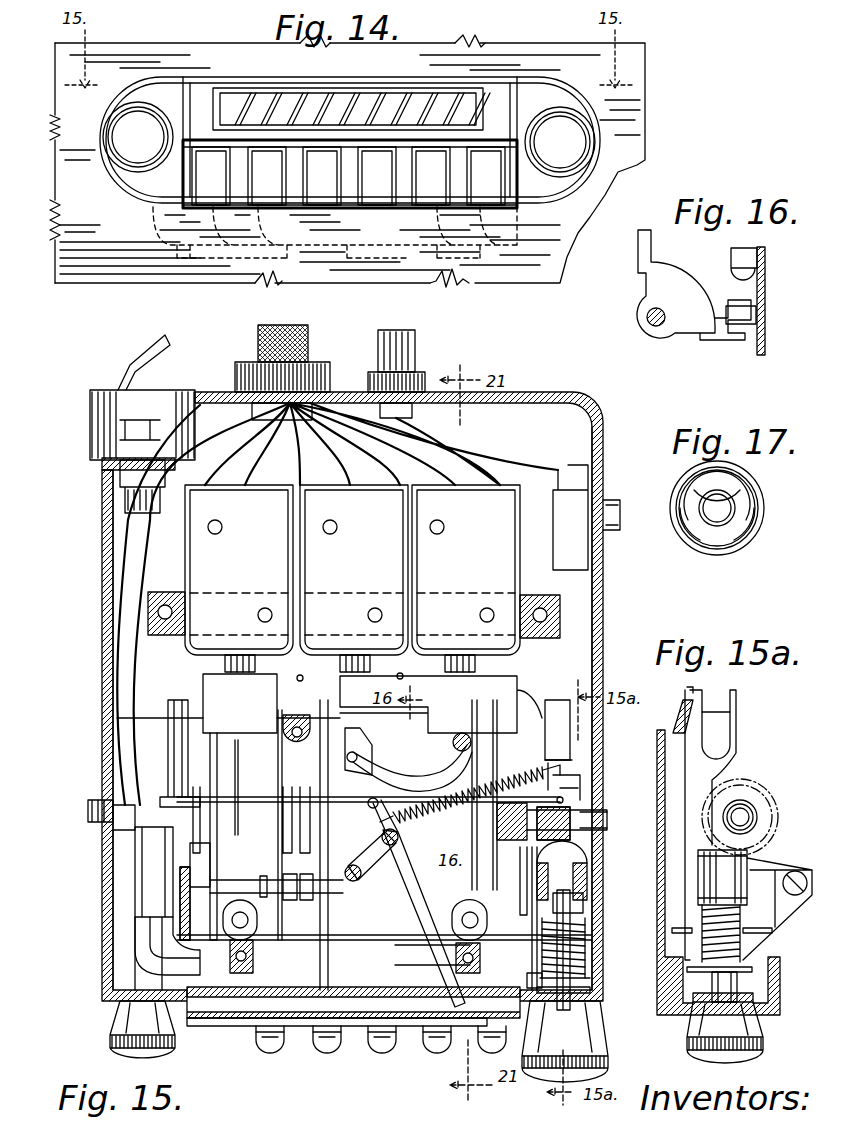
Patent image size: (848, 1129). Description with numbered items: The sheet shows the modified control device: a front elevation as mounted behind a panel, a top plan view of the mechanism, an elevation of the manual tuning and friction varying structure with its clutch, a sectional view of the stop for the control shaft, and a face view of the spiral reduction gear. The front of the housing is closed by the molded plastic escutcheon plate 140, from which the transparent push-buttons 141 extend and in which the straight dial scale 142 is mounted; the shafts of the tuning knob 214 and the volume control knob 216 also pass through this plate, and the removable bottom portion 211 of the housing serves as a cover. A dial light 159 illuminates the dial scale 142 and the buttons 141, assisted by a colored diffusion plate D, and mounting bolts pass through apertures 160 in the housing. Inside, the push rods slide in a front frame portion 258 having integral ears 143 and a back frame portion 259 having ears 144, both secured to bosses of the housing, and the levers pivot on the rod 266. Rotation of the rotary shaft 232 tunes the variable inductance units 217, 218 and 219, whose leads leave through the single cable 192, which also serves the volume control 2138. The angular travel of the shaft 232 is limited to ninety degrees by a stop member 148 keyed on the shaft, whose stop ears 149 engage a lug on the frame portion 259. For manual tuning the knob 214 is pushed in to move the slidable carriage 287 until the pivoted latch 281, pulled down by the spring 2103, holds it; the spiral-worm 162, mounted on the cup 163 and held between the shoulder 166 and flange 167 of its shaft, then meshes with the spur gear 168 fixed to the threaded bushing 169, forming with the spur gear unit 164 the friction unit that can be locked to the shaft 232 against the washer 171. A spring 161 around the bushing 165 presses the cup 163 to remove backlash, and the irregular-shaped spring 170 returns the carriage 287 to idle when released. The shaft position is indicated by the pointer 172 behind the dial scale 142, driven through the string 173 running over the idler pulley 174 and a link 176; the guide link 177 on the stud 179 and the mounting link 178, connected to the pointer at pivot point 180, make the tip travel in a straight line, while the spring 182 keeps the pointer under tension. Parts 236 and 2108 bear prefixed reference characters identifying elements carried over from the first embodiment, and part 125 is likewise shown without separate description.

In FIG. 14, the escutcheon plate 140 is at (200, 95).
In FIG. 15A, the escutcheon plate 140 is at (672, 1012).
In FIG. 14, the push-button 141 is at (320, 200).
In FIG. 15, the push-button 141 is at (382, 1050).
In FIG. 14, the dial scale 142 is at (450, 102).
In FIG. 15, the dial scale 142 is at (300, 1028).
In FIG. 15, the integral ears 143 is at (240, 985).
In FIG. 16, the ears 144 is at (750, 262).
In FIG. 15, the ears 144 is at (288, 723).
In FIG. 16, the stop member 148 is at (685, 277).
In FIG. 16, the stop ears 149 is at (644, 254).
In FIG. 15, the dial light 159 is at (140, 945).
In FIG. 15, the apertures 160 is at (241, 912).
In FIG. 15, the spring 161 is at (586, 940).
In FIG. 15A, the spring 161 is at (745, 957).
In FIG. 17, the spiral-worm 162 is at (764, 496).
In FIG. 15, the spiral-worm 162 is at (572, 889).
In FIG. 15A, the spiral-worm 162 is at (750, 872).
In FIG. 15, the cup 163 is at (583, 905).
In FIG. 15, the spur gear unit 164 is at (584, 800).
In FIG. 15, the bushing 165 is at (530, 978).
In FIG. 15, the shoulder 166 is at (588, 960).
In FIG. 15, the flange 167 is at (588, 870).
In FIG. 15, the spur gear 168 is at (568, 790).
In FIG. 15A, the spur gear 168 is at (762, 806).
In FIG. 15, the threaded bushing 169 is at (560, 768).
In FIG. 15, the irregular-shaped spring 170 is at (592, 988).
In FIG. 15A, the irregular-shaped spring 170 is at (773, 931).
In FIG. 15, the washer 171 is at (586, 818).
In FIG. 15, the pointer 172 is at (425, 1030).
In FIG. 15, the string 173 is at (230, 760).
In FIG. 15, the idler pulley 174 is at (200, 716).
In FIG. 15, the link 176 is at (335, 797).
In FIG. 15, the guide link 177 is at (353, 882).
In FIG. 15, the mounting link 178 is at (455, 743).
In FIG. 15, the stud 179 is at (478, 748).
In FIG. 15, the pivot point 180 is at (348, 728).
In FIG. 15, the spring 182 is at (470, 793).
In FIG. 15, the cable 192 is at (305, 333).
In FIG. 14, the bottom portion 211 is at (533, 207).
In FIG. 14, the tuning knob 214 is at (575, 140).
In FIG. 15, the tuning knob 214 is at (545, 1065).
In FIG. 15A, the tuning knob 214 is at (750, 1054).
In FIG. 14, the volume control knob 216 is at (130, 158).
In FIG. 15, the volume control knob 216 is at (110, 1036).
In FIG. 15, the variable inductance unit 217 is at (466, 578).
In FIG. 15, the variable inductance unit 218 is at (354, 578).
In FIG. 15, the variable inductance unit 219 is at (239, 578).
In FIG. 16, the rotary shaft 232 is at (665, 325).
In FIG. 15, the rotary shaft 232 is at (598, 824).
In FIG. 15, the contact block 236 is at (232, 830).
In FIG. 15, the front frame portion 258 is at (431, 959).
In FIG. 15A, the front frame portion 258 is at (683, 933).
In FIG. 16, the back frame portion 259 is at (765, 336).
In FIG. 17, the rod 266 is at (712, 515).
In FIG. 15, the pivoted latch 281 is at (515, 692).
In FIG. 15A, the pivoted latch 281 is at (685, 712).
In FIG. 15, the carriage 287 is at (535, 705).
In FIG. 15A, the carriage 287 is at (725, 760).
In FIG. 15, the spring 2103 is at (398, 673).
In FIG. 15, the terminal bolt 2108 is at (105, 805).
In FIG. 15, the volume control 2138 is at (105, 405).
In FIG. 15, the tube 125 is at (150, 840).
In FIG. 15, the diffusion plate D is at (349, 1064).